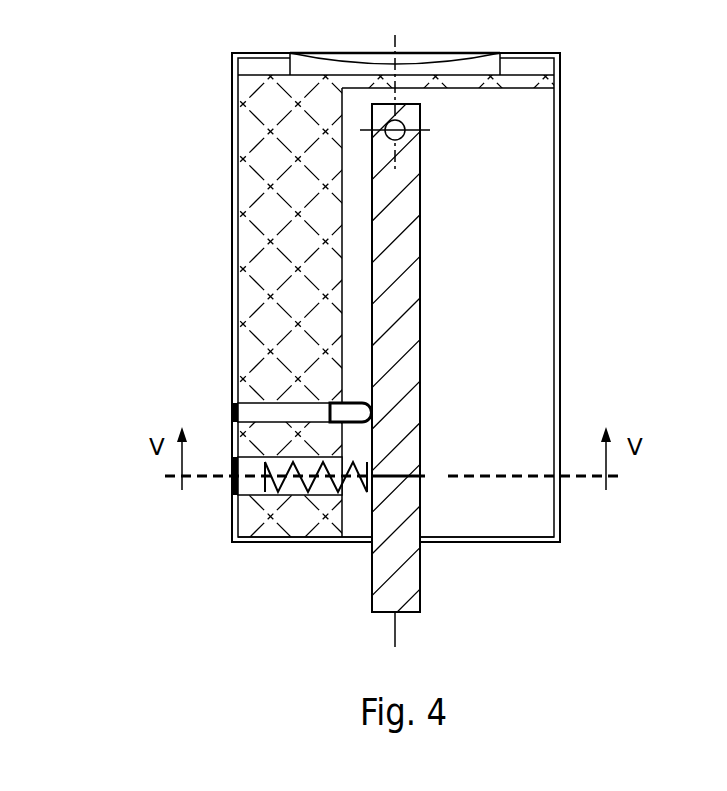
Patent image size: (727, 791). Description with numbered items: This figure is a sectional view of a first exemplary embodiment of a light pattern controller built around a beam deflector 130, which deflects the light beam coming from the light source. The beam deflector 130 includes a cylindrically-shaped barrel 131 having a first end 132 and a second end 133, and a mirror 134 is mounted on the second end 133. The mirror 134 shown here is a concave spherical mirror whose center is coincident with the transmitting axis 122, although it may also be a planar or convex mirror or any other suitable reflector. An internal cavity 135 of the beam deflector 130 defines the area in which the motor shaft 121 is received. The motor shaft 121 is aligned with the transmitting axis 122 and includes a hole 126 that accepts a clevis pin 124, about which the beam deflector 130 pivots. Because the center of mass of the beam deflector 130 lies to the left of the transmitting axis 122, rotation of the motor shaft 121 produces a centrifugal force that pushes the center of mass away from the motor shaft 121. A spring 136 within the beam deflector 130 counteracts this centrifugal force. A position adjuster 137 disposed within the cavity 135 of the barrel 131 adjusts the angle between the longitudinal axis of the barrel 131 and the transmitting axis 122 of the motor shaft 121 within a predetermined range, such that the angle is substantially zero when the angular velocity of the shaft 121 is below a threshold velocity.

The beam deflector 130 is at (124, 232).
The barrel 131 is at (554, 195).
The first end 132 is at (518, 560).
The second end 133 is at (238, 54).
The mirror 134 is at (447, 55).
The internal cavity 135 is at (513, 338).
The spring 136 is at (297, 484).
The position adjuster 137 is at (355, 402).
The motor shaft 121 is at (423, 582).
The transmitting axis 122 is at (395, 635).
The clevis pin 124 is at (402, 121).
The hole 126 is at (401, 139).